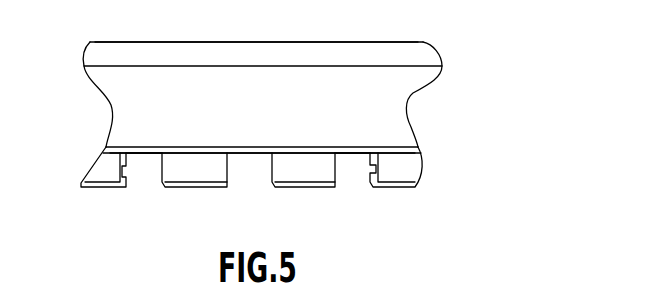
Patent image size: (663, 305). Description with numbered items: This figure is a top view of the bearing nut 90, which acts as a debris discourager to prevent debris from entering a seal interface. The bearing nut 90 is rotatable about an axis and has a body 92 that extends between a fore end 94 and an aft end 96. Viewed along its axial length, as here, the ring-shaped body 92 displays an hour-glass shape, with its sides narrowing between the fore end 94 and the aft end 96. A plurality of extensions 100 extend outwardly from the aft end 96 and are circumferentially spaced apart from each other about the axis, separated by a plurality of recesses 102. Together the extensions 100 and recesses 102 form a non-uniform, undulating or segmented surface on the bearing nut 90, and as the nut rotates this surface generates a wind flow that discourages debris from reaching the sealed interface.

The bearing nut 90 is at (500, 61).
The body 92 is at (137, 107).
The fore end 94 is at (238, 42).
The aft end 96 is at (423, 147).
The extensions 100 is at (103, 168).
The slots between pins 102 is at (282, 165).